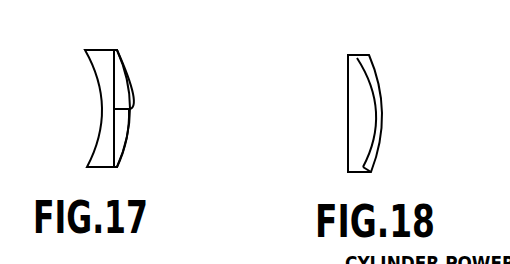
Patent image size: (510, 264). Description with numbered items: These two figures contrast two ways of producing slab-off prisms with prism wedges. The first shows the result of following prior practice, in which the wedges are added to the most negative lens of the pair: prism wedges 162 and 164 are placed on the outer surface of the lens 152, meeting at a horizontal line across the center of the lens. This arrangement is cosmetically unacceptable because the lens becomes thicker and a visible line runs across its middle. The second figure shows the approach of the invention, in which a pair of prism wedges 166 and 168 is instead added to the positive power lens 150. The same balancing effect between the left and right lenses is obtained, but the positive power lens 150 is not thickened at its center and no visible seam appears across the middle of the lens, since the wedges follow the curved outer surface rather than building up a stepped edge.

In FIG. 18, the positive power lens 150 is at (348, 113).
In FIG. 17, the lens 152 is at (92, 152).
In FIG. 17, the prism wedge 162 is at (122, 87).
In FIG. 17, the prism wedge 164 is at (122, 136).
In FIG. 18, the prism wedge 166 is at (365, 60).
In FIG. 18, the prism wedge 168 is at (370, 168).